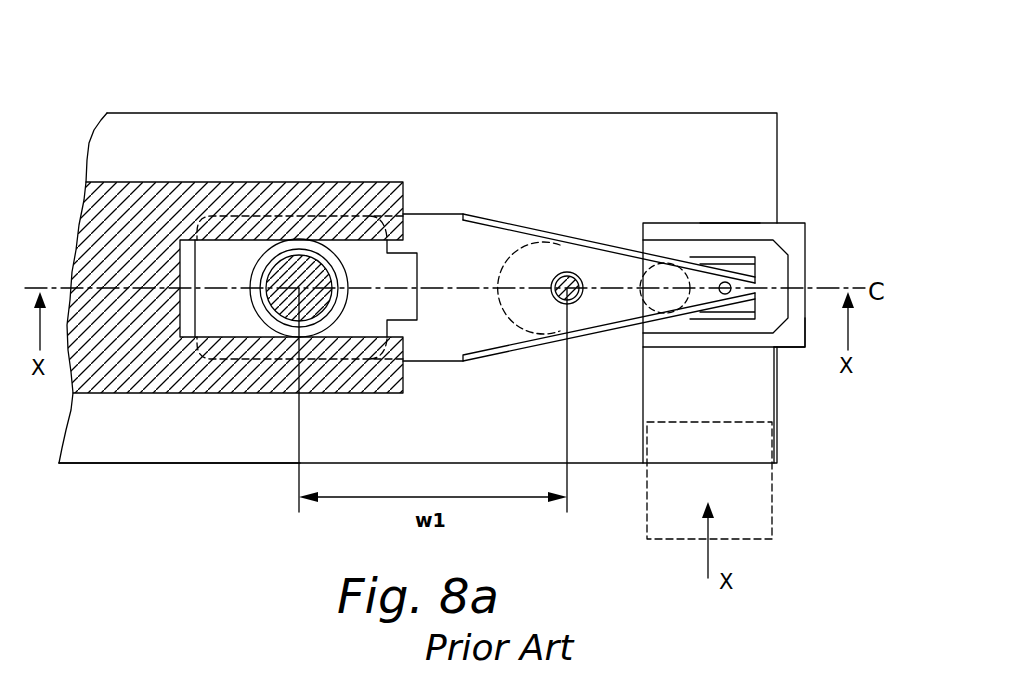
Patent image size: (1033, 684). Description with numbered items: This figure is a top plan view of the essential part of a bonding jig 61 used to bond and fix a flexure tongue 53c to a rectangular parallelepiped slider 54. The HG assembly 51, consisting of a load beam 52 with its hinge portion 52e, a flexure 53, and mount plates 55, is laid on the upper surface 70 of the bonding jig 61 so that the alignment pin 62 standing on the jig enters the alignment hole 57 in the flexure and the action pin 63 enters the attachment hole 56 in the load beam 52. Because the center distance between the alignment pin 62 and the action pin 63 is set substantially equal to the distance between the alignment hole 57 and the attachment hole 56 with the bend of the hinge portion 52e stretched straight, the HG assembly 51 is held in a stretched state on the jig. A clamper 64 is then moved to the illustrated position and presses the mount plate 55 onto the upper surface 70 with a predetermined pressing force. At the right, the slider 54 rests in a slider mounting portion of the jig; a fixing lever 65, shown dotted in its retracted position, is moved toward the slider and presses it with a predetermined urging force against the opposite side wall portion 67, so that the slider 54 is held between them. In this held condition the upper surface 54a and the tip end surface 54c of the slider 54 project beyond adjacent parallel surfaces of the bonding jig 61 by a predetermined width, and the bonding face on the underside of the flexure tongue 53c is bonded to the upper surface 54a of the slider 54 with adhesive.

The bonding jig 61 is at (532, 86).
The upper surface of the bonding jig 70 is at (125, 450).
The clamper 64 is at (145, 200).
The mount plates 55 is at (240, 322).
The attachment hole 56 is at (300, 258).
The action pin 63 is at (308, 268).
The HG assembly 51 is at (457, 207).
The load beam 52 is at (480, 330).
The hinge portion 52e is at (425, 348).
The alignment hole 57 is at (563, 270).
The alignment pin 62 is at (578, 280).
The flexure 53 is at (697, 250).
The flexure tongue 53c is at (685, 313).
The slider 54 is at (795, 223).
The upper surface of the slider 54a is at (800, 262).
The tip end surface of the slider 54c is at (808, 335).
The side wall portion 67 is at (715, 228).
The fixing lever 65 is at (745, 437).